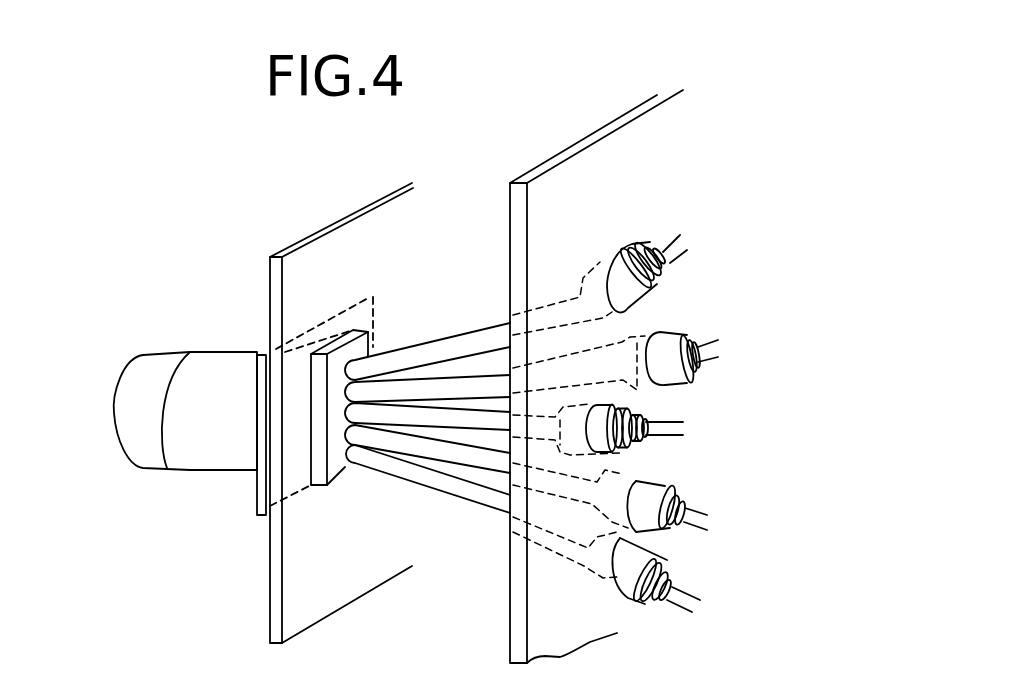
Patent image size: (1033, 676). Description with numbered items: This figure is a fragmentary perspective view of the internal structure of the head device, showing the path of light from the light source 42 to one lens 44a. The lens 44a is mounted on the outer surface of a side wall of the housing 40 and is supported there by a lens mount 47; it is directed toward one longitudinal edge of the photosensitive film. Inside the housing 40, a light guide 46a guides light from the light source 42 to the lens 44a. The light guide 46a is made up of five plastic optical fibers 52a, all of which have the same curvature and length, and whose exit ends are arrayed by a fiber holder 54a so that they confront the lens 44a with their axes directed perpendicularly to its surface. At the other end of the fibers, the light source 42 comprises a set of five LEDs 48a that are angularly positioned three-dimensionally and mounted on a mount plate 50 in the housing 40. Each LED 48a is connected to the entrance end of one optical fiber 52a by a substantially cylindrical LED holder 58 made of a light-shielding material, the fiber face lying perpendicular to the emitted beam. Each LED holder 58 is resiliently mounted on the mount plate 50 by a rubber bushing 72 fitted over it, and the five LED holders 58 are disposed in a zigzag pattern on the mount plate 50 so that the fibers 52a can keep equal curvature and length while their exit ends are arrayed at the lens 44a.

The housing 40 is at (327, 218).
The light source 42 is at (659, 213).
The lens 44a is at (210, 455).
The light guide 46a is at (400, 323).
The lens mount 47 is at (263, 515).
The LEDs 48a is at (600, 262).
The mount plate 50 is at (604, 157).
The optical fibers 52a is at (449, 390).
The fiber holder 54a is at (340, 473).
The LED holder 58 is at (661, 270).
The rubber bushing 72 is at (637, 294).